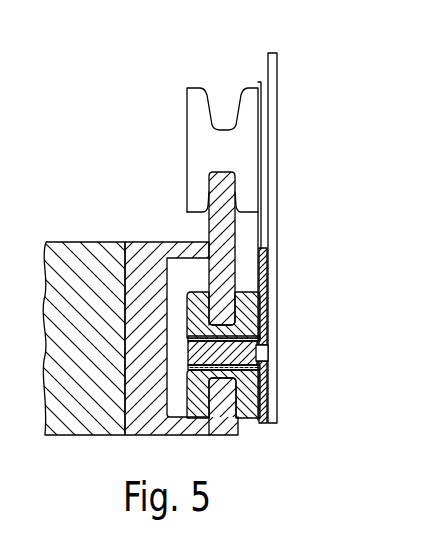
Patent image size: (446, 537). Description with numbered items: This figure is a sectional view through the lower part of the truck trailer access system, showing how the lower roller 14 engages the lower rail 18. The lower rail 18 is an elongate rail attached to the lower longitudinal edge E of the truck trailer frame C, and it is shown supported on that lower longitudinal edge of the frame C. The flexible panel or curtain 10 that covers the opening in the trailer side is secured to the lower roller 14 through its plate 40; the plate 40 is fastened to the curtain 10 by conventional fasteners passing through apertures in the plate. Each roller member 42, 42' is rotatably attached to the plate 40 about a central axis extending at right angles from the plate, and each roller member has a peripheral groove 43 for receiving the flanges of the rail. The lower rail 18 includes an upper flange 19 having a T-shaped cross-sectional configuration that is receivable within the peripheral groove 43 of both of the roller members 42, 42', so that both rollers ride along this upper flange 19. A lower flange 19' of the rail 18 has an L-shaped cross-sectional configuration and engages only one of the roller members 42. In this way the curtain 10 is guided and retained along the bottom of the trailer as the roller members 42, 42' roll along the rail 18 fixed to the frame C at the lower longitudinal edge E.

The truck trailer frame C is at (63, 229).
The lower rail 18 is at (153, 223).
The lower roller 14 is at (192, 76).
The peripheral groove 43 is at (208, 98).
The plate 40 is at (260, 83).
The flexible panel or curtain 10 is at (273, 63).
The roller member 42' is at (165, 100).
The upper flange 19 is at (264, 248).
The roller member 42 is at (252, 335).
The lower flange 19' is at (259, 411).
The lower longitudinal edge E is at (107, 437).